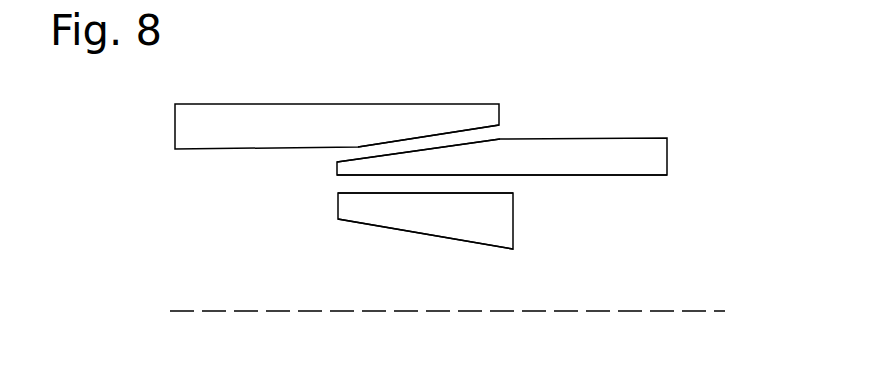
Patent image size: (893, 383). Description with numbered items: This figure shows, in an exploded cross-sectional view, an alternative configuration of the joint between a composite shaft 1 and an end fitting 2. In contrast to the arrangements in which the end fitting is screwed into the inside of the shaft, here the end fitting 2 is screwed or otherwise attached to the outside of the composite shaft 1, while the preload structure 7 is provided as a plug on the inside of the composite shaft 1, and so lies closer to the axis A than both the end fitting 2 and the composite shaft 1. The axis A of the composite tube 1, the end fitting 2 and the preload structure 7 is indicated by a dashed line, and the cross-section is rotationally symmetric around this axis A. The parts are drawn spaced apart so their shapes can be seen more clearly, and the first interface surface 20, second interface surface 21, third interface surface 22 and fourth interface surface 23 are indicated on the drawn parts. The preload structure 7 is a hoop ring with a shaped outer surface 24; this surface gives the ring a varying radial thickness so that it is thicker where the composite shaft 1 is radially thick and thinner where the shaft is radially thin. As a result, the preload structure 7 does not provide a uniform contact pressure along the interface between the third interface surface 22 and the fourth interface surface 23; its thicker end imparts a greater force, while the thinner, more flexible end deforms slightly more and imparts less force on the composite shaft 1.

The composite shaft 1 is at (650, 148).
The end fitting 2 is at (210, 130).
The preload structure 7 is at (370, 210).
The first interface surface 20 is at (358, 146).
The second interface surface 21 is at (400, 152).
The third interface surface 22 is at (455, 177).
The fourth interface surface 23 is at (485, 188).
The outer surface 24 is at (442, 236).
The axis A is at (702, 310).